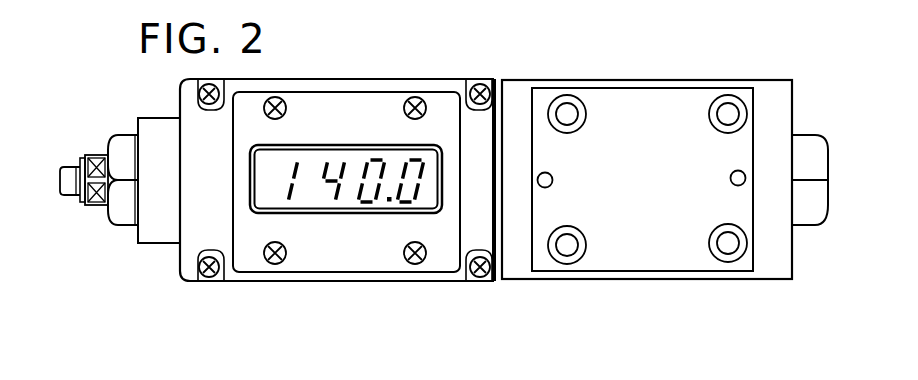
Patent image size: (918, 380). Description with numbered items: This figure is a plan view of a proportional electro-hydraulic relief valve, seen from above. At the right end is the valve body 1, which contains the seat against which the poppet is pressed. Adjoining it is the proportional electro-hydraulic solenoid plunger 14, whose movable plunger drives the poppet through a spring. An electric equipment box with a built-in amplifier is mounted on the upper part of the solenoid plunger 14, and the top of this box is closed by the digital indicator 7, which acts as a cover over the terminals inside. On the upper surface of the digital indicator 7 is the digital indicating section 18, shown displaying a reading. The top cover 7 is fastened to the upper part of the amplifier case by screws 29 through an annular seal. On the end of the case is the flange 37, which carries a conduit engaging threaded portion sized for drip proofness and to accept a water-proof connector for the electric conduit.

The valve body 1 is at (773, 265).
The digital indicator 7 is at (322, 258).
The proportional electro-hydraulic solenoid plunger 14 is at (123, 223).
The digital indicating section 18 is at (349, 195).
The screws 29 is at (480, 83).
The flange 37 is at (172, 238).